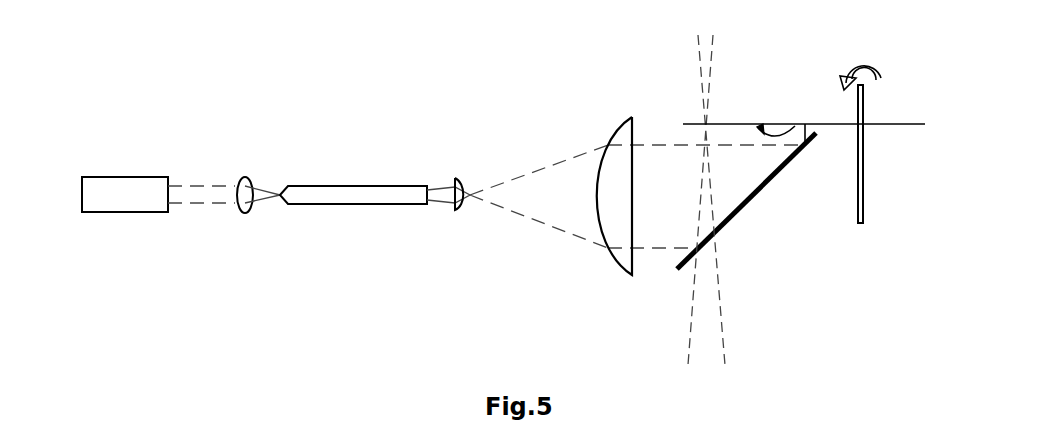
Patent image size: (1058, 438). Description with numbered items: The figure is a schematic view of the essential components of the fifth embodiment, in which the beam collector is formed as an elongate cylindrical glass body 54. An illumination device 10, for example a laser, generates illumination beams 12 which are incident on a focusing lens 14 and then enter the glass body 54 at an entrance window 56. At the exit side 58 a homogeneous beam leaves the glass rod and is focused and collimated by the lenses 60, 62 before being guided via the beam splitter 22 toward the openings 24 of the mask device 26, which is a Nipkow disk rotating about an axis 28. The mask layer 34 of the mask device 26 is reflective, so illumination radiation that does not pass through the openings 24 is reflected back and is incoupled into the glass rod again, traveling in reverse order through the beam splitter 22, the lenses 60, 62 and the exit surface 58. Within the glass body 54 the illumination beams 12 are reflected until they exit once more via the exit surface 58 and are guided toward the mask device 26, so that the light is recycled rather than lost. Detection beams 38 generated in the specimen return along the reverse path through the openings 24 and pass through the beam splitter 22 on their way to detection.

The illumination device 10 is at (110, 190).
The illumination beams 12 is at (187, 195).
The focusing lens 14 is at (250, 192).
The beam splitter 22 is at (768, 180).
The openings 24 is at (727, 124).
The mask device 26 is at (893, 124).
The axis 28 is at (858, 175).
The mask layer 34 is at (788, 128).
The detection beams 38 is at (705, 322).
The elongate cylindrical glass body 54 is at (372, 158).
The entrance window 56 is at (281, 190).
The exit side 58 is at (450, 190).
The lens 60 is at (456, 180).
The lens 62 is at (620, 227).